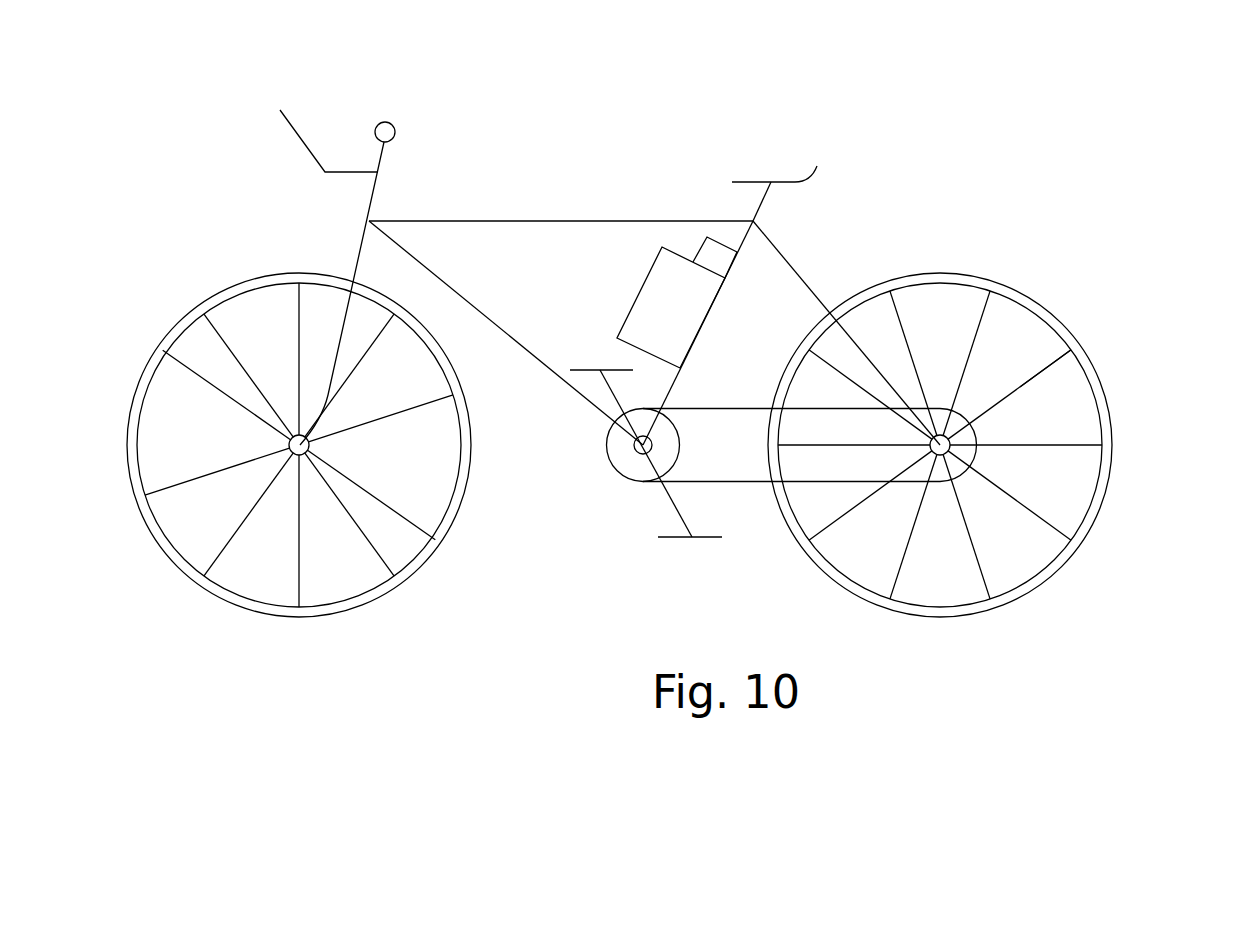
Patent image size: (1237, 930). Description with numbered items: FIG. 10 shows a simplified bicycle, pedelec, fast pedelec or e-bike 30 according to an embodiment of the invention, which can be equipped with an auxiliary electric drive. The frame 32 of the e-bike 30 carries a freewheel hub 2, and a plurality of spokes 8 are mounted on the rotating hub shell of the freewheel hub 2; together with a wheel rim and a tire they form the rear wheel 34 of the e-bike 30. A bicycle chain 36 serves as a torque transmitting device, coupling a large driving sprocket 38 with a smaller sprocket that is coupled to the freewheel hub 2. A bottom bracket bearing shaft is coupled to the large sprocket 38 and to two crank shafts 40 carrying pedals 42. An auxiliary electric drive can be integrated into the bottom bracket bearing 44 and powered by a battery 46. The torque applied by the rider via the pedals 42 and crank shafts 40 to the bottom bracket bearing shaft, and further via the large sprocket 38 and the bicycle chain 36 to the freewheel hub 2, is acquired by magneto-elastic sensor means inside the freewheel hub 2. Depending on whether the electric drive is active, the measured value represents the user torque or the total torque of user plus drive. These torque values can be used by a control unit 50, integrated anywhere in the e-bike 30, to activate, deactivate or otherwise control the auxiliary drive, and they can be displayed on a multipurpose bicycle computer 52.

The e-bike 30 is at (583, 322).
The frame 32 is at (563, 221).
The rear wheel 34 is at (1017, 278).
The bicycle chain 36 is at (733, 407).
The large driving sprocket 38 is at (608, 455).
The crank shaft 40 is at (608, 388).
The pedal 42 is at (587, 368).
The bottom bracket bearing 44 is at (633, 452).
The battery 46 is at (671, 307).
The control unit 50 is at (700, 250).
The multipurpose bicycle computer 52 is at (298, 135).
The freewheel hub 2 is at (982, 423).
The spoke 8 is at (1050, 353).